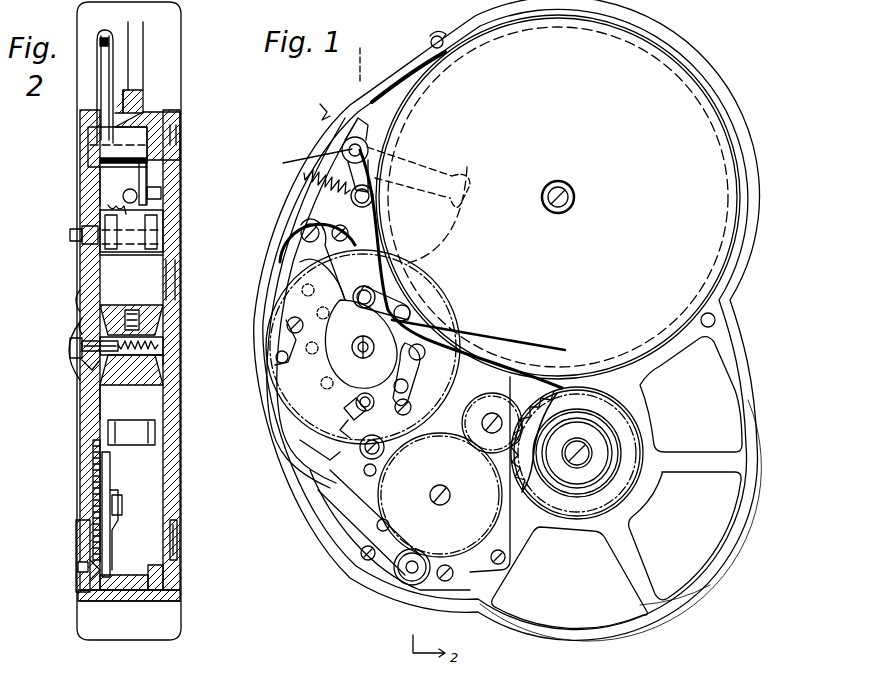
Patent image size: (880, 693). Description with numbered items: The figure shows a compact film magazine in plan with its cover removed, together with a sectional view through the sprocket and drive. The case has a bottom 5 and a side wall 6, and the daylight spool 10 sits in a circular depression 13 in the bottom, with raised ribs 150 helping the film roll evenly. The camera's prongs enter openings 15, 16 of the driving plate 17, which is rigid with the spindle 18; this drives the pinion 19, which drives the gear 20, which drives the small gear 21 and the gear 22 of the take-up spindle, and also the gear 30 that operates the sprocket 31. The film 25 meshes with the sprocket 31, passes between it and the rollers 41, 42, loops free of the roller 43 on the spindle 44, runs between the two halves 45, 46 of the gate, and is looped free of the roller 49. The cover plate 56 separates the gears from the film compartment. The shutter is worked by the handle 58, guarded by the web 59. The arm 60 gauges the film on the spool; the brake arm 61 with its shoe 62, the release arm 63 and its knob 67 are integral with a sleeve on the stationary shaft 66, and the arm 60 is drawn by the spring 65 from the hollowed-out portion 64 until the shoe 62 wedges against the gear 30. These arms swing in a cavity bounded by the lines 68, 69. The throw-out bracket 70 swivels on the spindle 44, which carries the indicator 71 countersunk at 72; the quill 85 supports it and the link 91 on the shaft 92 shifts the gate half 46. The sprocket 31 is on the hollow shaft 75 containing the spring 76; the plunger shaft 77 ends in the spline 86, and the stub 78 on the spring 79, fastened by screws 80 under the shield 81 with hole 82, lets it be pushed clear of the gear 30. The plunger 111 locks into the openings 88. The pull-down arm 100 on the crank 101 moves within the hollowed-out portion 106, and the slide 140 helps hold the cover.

In FIG. 2, the bottom 5 is at (80, 209).
In FIG. 1, the bottom 5 is at (368, 360).
In FIG. 1, the side wall 6 is at (352, 566).
In FIG. 1, the daylight spool 10 is at (640, 82).
In FIG. 1, the circular depression 13 is at (714, 297).
In FIG. 2, the opening 15 is at (76, 547).
In FIG. 2, the opening 16 is at (78, 596).
In FIG. 2, the driving plate 17 is at (95, 601).
In FIG. 2, the spindle 18 is at (78, 570).
In FIG. 2, the pinion 19 is at (84, 581).
In FIG. 1, the pinion 19 is at (395, 584).
In FIG. 1, the gear 20 is at (482, 514).
In FIG. 1, the small gear 21 is at (491, 400).
In FIG. 1, the gear 22 is at (522, 463).
In FIG. 1, the film 25 is at (430, 345).
In FIG. 2, the gear 30 is at (82, 425).
In FIG. 1, the gear 30 is at (447, 303).
In FIG. 2, the sprocket 31 is at (166, 316).
In FIG. 1, the sprocket 31 is at (395, 340).
In FIG. 1, the roller 41 is at (406, 305).
In FIG. 1, the roller 42 is at (364, 286).
In FIG. 2, the roller 43 is at (165, 220).
In FIG. 2, the spindle 44 is at (157, 240).
In FIG. 1, the spindle 44 is at (300, 233).
In FIG. 1, the gate half 45 is at (296, 188).
In FIG. 1, the gate half 46 is at (300, 455).
In FIG. 2, the roller 49 is at (142, 432).
In FIG. 2, the cover plate 56 is at (92, 447).
In FIG. 1, the cover plate 56 is at (382, 240).
In FIG. 1, the handle 58 is at (320, 104).
In FIG. 2, the web 59 is at (138, 44).
In FIG. 2, the arm 60 is at (106, 70).
In FIG. 1, the arm 60 is at (437, 35).
In FIG. 2, the brake arm 61 is at (88, 167).
In FIG. 1, the brake arm 61 is at (410, 167).
In FIG. 1, the brake shoe 62 is at (468, 183).
In FIG. 2, the release arm 63 is at (146, 178).
In FIG. 1, the hollowed-out portion 64 is at (405, 58).
In FIG. 2, the spring 65 is at (123, 195).
In FIG. 1, the spring 65 is at (300, 160).
In FIG. 2, the shaft 66 is at (176, 152).
In FIG. 1, the shaft 66 is at (343, 148).
In FIG. 2, the knob 67 is at (162, 192).
In FIG. 1, the dotted line 68 is at (462, 216).
In FIG. 1, the line 69 is at (304, 176).
In FIG. 2, the throw-out bracket 70 is at (168, 274).
In FIG. 1, the throw-out bracket 70 is at (300, 256).
In FIG. 2, the indicator 71 is at (72, 234).
In FIG. 2, the countersunk area 72 is at (82, 242).
In FIG. 2, the shaft 75 is at (165, 357).
In FIG. 2, the spring 76 is at (165, 340).
In FIG. 2, the plunger shaft 77 is at (98, 392).
In FIG. 2, the stub shaft 78 is at (72, 345).
In FIG. 2, the spring 79 is at (82, 325).
In FIG. 2, the screws 80 is at (78, 299).
In FIG. 2, the shield 81 is at (74, 370).
In FIG. 2, the hole 82 is at (78, 356).
In FIG. 2, the quill 85 is at (128, 214).
In FIG. 2, the spline 86 is at (88, 372).
In FIG. 1, the openings 88 is at (356, 400).
In FIG. 1, the link 91 is at (278, 352).
In FIG. 1, the shaft 92 is at (288, 320).
In FIG. 2, the pull-down arm 100 is at (104, 472).
In FIG. 1, the pull-down arm 100 is at (375, 538).
In FIG. 2, the crank 101 is at (112, 603).
In FIG. 1, the hollowed-out portion 106 is at (300, 476).
In FIG. 1, the plunger 111 is at (344, 412).
In FIG. 2, the slide 140 is at (174, 541).
In FIG. 1, the raised ribs 150 is at (650, 586).